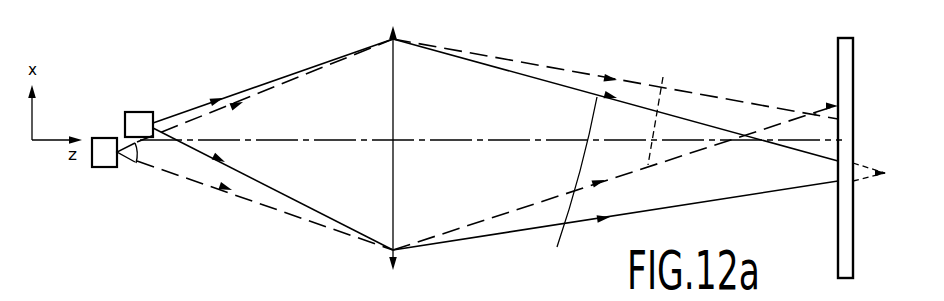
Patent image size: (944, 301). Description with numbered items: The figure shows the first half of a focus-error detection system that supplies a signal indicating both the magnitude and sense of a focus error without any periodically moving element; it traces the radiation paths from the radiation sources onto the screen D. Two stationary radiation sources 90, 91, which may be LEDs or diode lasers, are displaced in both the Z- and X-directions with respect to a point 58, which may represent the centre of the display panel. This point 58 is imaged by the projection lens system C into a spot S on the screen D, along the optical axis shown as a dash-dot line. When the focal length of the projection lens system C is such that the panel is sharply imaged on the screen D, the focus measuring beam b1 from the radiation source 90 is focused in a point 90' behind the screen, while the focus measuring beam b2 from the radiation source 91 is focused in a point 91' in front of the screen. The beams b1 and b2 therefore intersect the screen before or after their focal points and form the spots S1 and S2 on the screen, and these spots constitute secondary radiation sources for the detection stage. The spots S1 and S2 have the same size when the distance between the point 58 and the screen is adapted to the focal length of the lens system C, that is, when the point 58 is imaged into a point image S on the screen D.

The radiation source 90 is at (139, 108).
The radiation source 91 is at (104, 173).
The point 58 is at (136, 163).
The projection lens system C is at (393, 135).
The screen D is at (845, 142).
The focus measuring beam b1 is at (564, 182).
The focus measuring beam b2 is at (665, 109).
The focal point 91' is at (786, 90).
The focal point 90' is at (871, 189).
The spot S is at (840, 147).
The spot S1 is at (838, 181).
The spot S2 is at (836, 106).